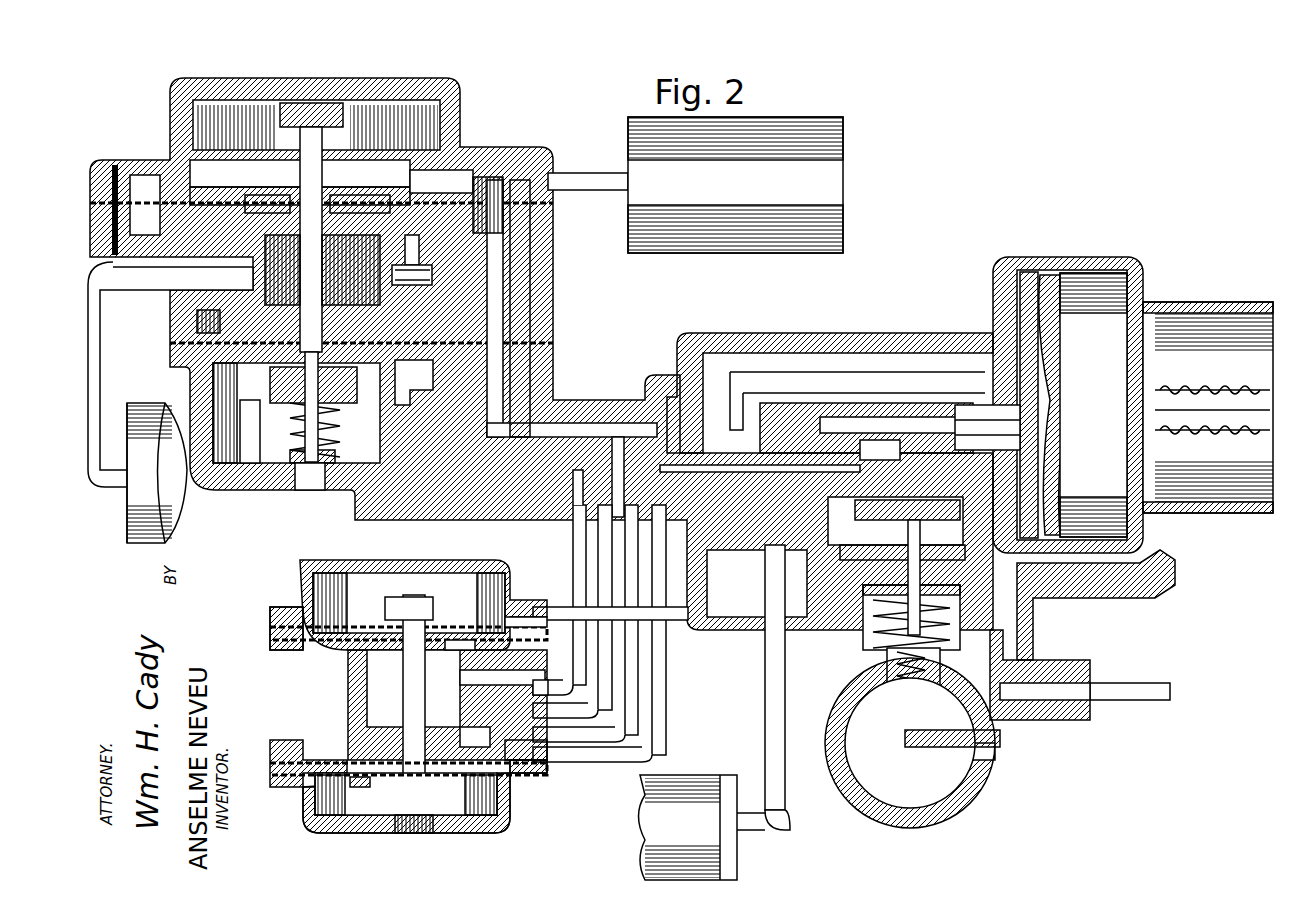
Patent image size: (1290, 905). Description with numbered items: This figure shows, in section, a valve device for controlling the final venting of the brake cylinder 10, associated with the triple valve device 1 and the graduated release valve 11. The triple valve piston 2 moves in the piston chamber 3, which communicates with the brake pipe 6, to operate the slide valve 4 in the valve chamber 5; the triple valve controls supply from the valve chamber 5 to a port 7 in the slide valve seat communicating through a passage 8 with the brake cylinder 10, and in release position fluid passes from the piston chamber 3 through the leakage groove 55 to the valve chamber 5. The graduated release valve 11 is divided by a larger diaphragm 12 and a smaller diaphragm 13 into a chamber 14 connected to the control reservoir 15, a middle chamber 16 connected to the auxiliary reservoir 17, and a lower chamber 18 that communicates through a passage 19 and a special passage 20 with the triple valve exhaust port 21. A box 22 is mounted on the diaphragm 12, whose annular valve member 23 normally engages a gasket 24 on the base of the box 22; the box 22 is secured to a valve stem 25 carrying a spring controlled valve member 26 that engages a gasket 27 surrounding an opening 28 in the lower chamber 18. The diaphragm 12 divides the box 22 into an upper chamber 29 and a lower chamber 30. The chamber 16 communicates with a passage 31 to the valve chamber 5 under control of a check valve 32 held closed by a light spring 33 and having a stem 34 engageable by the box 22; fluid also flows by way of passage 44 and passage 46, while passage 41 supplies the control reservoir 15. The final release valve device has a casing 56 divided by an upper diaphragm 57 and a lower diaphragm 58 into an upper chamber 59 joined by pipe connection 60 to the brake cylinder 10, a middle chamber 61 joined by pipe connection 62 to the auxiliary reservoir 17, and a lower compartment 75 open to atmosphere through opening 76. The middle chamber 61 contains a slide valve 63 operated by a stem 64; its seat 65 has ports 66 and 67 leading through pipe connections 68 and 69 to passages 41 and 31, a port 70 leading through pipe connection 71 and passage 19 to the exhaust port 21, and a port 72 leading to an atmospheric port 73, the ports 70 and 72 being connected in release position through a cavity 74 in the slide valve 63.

The triple valve device 1 is at (1063, 262).
The triple valve piston 2 is at (1050, 320).
The piston chamber 3 is at (1113, 307).
The slide valve 4 is at (803, 413).
The valve chamber 5 is at (770, 367).
The brake pipe 6 is at (1103, 690).
The port 7 is at (868, 470).
The passage 8 is at (752, 530).
The brake cylinder 10 is at (688, 827).
The graduated release valve 11 is at (167, 333).
The larger diaphragm 12 is at (113, 217).
The smaller diaphragm 13 is at (222, 363).
The chamber 14 is at (177, 180).
The control reservoir 15 is at (813, 177).
The middle chamber 16 is at (220, 317).
The auxiliary reservoir 17 is at (137, 497).
The lower chamber 18 is at (237, 450).
The passage 19 is at (617, 470).
The special passage 20 is at (703, 470).
The triple valve exhaust port 21 is at (950, 460).
The internal casing or box 22 is at (267, 150).
The annular valve member 23 is at (289, 212).
The gasket 24 is at (287, 227).
The valve stem 25 is at (322, 270).
The spring controlled valve member 26 is at (327, 447).
The gasket 27 is at (343, 467).
The opening 28 is at (313, 480).
The upper chamber 29 is at (360, 189).
The lower chamber 30 is at (223, 215).
The passage 31 is at (493, 367).
The check valve 32 is at (395, 270).
The light spring 33 is at (395, 287).
The stem 34 is at (412, 253).
The passage 41 is at (537, 303).
The passage 44 is at (643, 447).
The passage 46 is at (433, 380).
The leakage groove 55 is at (1030, 273).
The casing 56 is at (317, 653).
The upper diaphragm 57 is at (323, 620).
The lower diaphragm 58 is at (320, 793).
The upper chamber 59 is at (367, 583).
The pipe connection 60 is at (670, 617).
The middle chamber 61 is at (347, 653).
The pipe connection 62 is at (657, 670).
The slide valve 63 is at (417, 667).
The stem 64 is at (353, 780).
The seat 65 is at (502, 692).
The port 66 is at (467, 722).
The port 67 is at (517, 733).
The pipe connection 68 is at (603, 540).
The pipe connection 69 is at (630, 683).
The port 70 is at (533, 683).
The pipe connection 71 is at (577, 570).
The port 72 is at (480, 663).
The atmospheric port 73 is at (533, 650).
The cavity 74 is at (427, 680).
The lower compartment 75 is at (353, 813).
The opening 76 is at (420, 830).